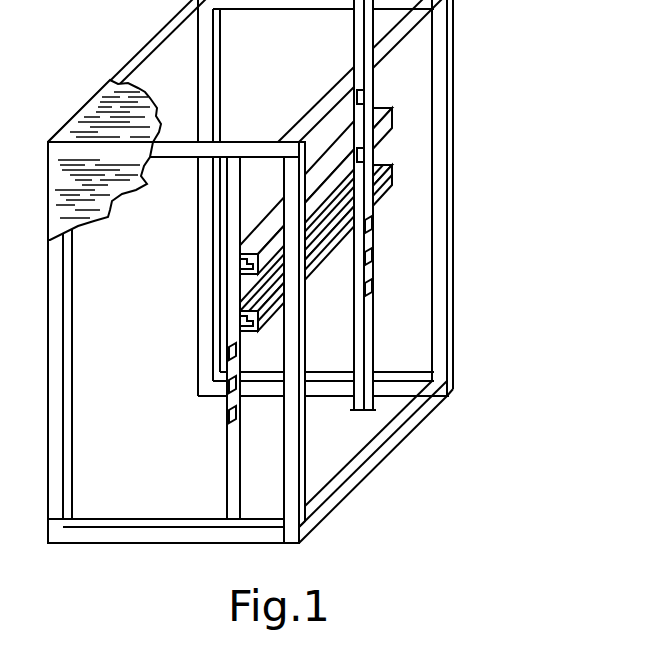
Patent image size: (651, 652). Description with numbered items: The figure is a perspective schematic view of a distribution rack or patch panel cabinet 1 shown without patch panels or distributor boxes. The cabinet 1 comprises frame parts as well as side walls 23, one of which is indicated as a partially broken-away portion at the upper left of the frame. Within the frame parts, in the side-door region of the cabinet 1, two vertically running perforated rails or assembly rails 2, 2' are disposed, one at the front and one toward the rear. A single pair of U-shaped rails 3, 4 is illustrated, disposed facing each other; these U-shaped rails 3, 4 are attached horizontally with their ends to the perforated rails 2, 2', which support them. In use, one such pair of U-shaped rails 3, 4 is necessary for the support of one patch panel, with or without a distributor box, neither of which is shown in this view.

The distribution rack or patch panel cabinet 1 is at (479, 171).
The vertical perforated rail 2 is at (444, 205).
The vertical perforated rail 2' is at (192, 338).
The U-shaped rail 3 is at (372, 111).
The U-shaped rail 4 is at (398, 177).
The side wall 23 is at (83, 188).